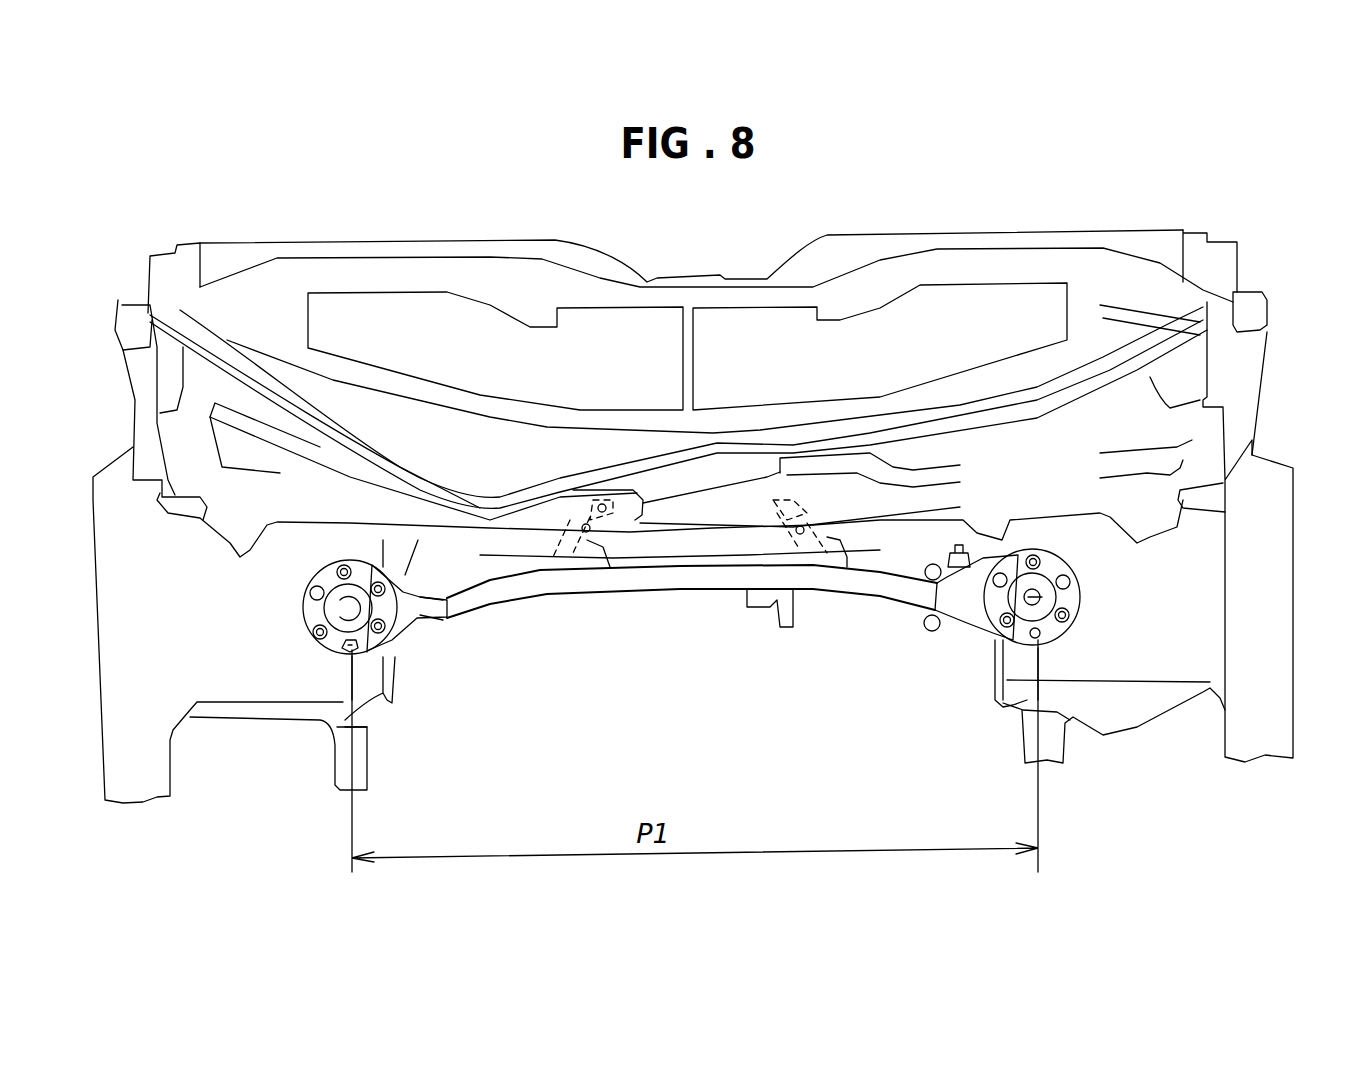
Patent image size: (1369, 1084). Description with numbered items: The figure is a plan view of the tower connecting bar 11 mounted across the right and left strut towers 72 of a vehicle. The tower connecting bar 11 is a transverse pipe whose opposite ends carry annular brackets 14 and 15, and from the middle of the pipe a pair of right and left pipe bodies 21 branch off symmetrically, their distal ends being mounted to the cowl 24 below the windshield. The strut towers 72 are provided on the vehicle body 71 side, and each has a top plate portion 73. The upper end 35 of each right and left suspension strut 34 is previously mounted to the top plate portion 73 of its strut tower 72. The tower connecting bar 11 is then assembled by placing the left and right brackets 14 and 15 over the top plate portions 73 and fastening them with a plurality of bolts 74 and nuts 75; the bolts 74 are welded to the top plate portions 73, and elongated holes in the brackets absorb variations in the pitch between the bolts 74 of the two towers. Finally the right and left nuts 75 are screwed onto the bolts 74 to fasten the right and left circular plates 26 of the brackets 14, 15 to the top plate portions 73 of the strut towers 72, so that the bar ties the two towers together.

The tower connecting bar 11 is at (568, 625).
The annular bracket 14 is at (1103, 574).
The annular bracket 15 is at (761, 592).
The pipe body 21 is at (587, 537).
The cowl 24 is at (575, 460).
The circular plate 26 is at (328, 643).
The suspension strut 34 is at (288, 605).
The upper end of suspension strut 35 is at (340, 608).
The vehicle body 71 is at (418, 732).
The strut tower 72 is at (397, 677).
The top plate portion 73 is at (340, 652).
The bolt 74 is at (315, 672).
The nut 75 is at (357, 657).